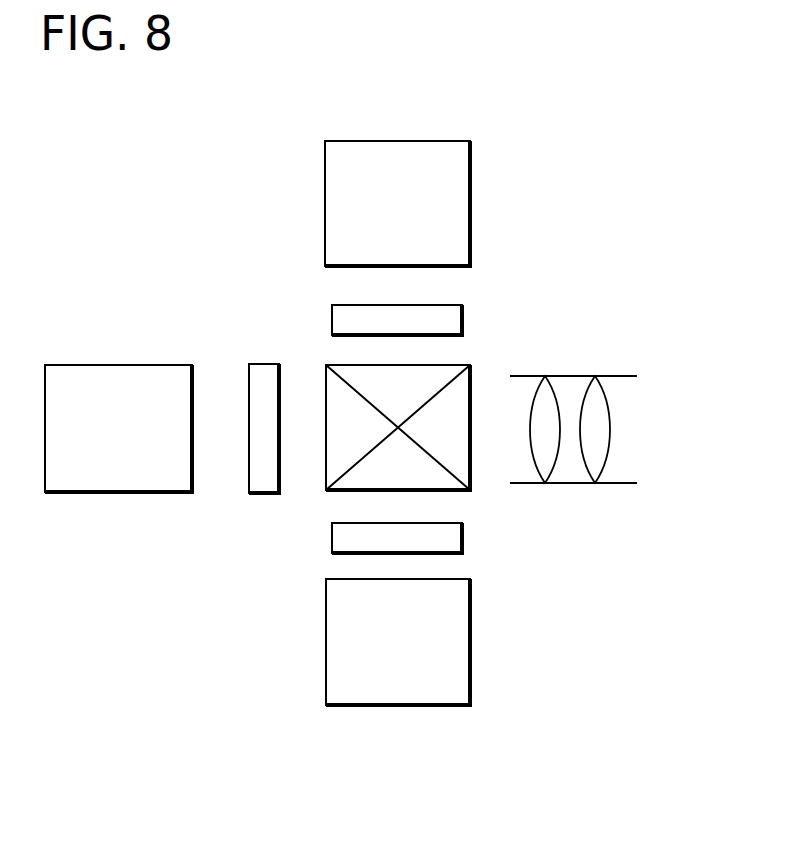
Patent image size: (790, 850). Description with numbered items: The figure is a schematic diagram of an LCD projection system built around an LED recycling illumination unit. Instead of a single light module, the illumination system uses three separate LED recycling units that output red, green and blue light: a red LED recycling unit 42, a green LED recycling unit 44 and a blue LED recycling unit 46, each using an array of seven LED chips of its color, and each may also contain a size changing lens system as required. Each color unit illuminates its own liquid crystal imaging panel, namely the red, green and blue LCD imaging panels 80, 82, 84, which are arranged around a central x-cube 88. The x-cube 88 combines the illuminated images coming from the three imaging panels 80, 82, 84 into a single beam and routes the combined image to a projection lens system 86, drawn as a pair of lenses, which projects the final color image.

The red LED recycling unit 42 is at (325, 192).
The green LED recycling unit 44 is at (139, 365).
The blue LED recycling unit 46 is at (326, 647).
The red LCD imaging panel 80 is at (462, 320).
The green LCD imaging panel 82 is at (269, 496).
The blue LCD imaging panel 84 is at (332, 538).
The projection lens system 86 is at (588, 490).
The x-cube 88 is at (458, 492).